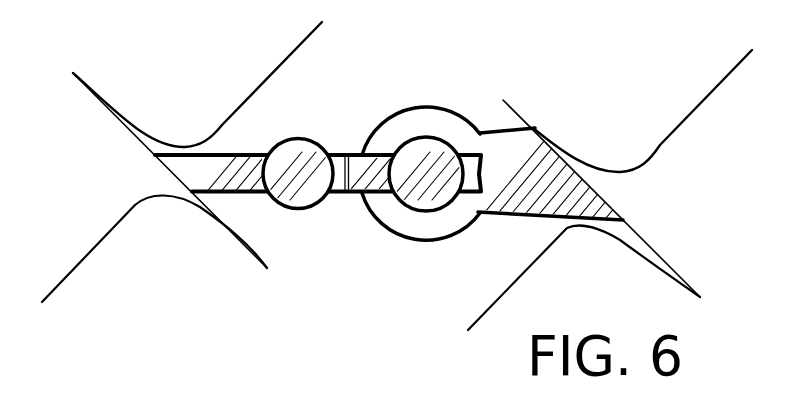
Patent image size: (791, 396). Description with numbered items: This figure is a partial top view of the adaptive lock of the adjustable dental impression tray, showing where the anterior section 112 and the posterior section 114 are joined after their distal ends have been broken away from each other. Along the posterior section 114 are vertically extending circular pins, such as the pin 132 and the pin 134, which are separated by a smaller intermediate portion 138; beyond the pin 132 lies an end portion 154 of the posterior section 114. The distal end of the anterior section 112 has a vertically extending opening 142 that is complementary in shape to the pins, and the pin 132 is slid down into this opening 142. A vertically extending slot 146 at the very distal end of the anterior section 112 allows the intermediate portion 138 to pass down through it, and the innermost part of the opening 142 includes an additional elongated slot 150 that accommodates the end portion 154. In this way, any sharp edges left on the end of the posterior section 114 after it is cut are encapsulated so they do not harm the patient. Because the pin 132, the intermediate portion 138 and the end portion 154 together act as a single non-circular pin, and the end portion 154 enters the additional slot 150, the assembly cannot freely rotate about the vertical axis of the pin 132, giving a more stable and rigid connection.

The anterior section 112 is at (531, 198).
The posterior section 114 is at (219, 183).
The pin 132 is at (417, 157).
The pin 134 is at (288, 158).
The intermediate portion 138 is at (358, 160).
The opening 142 is at (427, 211).
The slot 146 is at (380, 198).
The additional elongated slot 150 is at (482, 190).
The end portion 154 is at (480, 152).